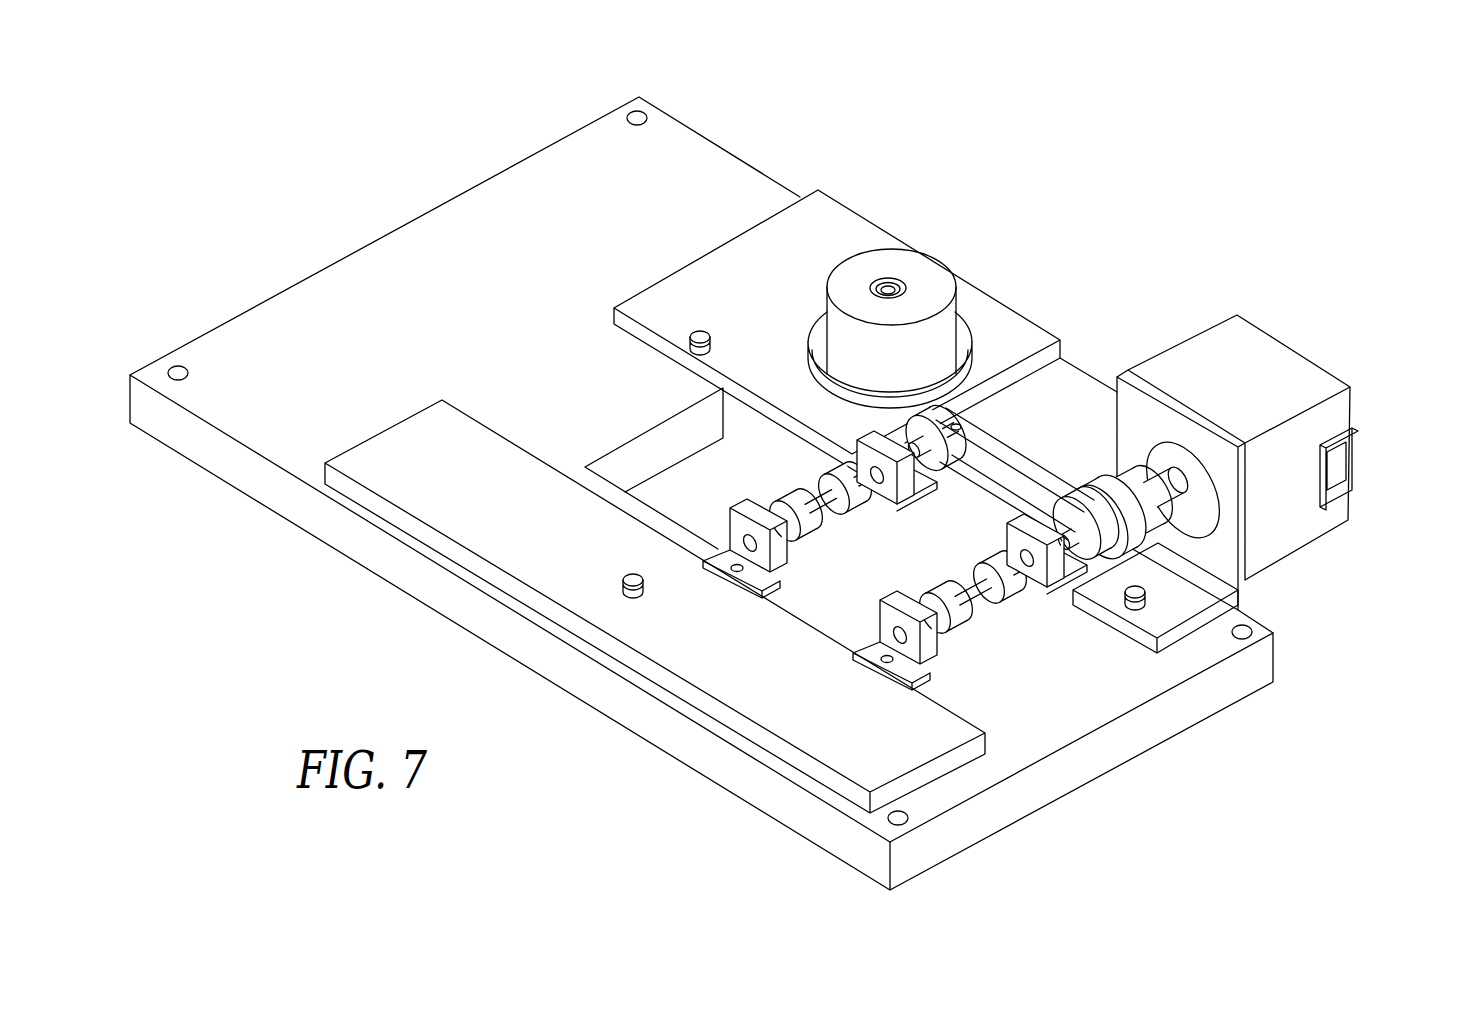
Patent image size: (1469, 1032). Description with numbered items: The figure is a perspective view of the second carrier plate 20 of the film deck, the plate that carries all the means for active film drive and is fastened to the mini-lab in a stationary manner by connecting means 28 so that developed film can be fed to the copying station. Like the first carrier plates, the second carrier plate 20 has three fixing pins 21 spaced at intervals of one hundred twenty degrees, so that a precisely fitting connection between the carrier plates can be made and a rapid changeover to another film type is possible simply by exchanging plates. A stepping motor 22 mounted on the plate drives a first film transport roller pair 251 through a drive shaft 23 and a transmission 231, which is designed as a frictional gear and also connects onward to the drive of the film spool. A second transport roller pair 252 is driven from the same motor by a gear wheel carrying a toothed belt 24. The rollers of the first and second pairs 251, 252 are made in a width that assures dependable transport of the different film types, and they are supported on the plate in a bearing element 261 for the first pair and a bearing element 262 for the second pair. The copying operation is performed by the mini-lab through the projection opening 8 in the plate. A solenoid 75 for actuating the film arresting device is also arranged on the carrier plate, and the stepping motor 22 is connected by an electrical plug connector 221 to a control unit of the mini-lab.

The projection opening 8 is at (709, 478).
The second carrier plate 20 is at (1035, 800).
The fixing pins 21 is at (705, 326).
The stepping motor 22 is at (1172, 355).
The drive shaft 23 is at (1192, 488).
The toothed belt 24 is at (1000, 448).
The connecting means 28 is at (186, 366).
The solenoid 75 is at (902, 266).
The plug connector 221 is at (1360, 433).
The transmission 231 is at (1110, 476).
The first film transport roller pair 251 is at (986, 566).
The second transport roller pair 252 is at (828, 520).
The bearing element for first active drive roller pair 261 is at (1046, 596).
The bearing element for second active drive roller pair 262 is at (905, 482).